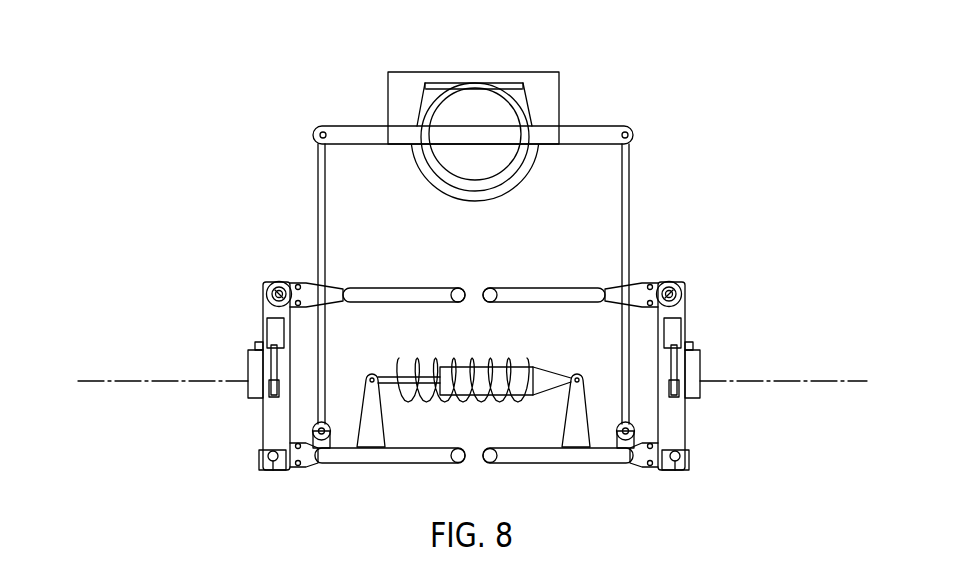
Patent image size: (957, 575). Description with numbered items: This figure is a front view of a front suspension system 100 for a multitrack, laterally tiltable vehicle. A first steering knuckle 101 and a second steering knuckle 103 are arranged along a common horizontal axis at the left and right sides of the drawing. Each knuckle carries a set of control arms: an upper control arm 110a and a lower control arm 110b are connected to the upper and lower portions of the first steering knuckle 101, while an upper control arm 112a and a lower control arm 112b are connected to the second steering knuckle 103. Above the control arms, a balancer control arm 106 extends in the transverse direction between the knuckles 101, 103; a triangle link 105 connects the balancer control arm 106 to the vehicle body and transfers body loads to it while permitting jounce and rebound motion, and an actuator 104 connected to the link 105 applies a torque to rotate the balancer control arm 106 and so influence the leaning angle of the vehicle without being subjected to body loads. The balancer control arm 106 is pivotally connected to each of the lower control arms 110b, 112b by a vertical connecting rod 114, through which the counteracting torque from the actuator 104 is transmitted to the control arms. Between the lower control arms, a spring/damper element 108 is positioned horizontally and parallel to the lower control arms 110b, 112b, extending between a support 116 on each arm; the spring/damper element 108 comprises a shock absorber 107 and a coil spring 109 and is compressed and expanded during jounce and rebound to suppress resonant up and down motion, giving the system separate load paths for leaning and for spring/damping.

The front suspension system 100 is at (661, 56).
The first steering knuckle 101 is at (250, 365).
The second steering knuckle 103 is at (700, 363).
The actuator 104 is at (500, 160).
The link 105 is at (425, 72).
The balancer control arm 106 is at (357, 126).
The shock absorber 107 is at (512, 364).
The spring/damper element 108 is at (441, 420).
The coil spring 109 is at (487, 398).
The upper control arm 110a is at (390, 288).
The lower control arm 110b is at (348, 462).
The upper control arm 112a is at (550, 288).
The lower control arm 112b is at (555, 462).
The connecting rod 114 is at (318, 223).
The support 116 is at (358, 399).